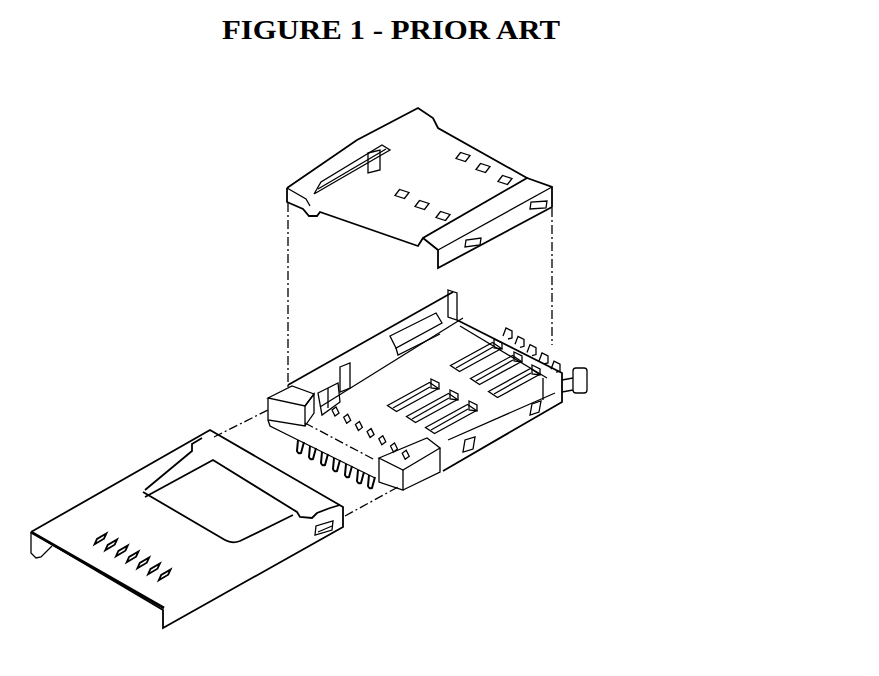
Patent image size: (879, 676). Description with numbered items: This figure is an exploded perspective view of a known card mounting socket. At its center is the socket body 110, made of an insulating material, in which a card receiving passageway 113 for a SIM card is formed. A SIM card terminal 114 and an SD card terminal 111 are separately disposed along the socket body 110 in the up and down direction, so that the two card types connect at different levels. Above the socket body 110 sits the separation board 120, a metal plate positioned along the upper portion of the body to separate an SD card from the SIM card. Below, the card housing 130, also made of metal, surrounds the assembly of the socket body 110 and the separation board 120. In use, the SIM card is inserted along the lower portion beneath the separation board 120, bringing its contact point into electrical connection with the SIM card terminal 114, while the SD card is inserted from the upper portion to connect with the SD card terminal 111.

The socket body 110 is at (391, 406).
The SD card terminal 111 is at (347, 387).
The card receiving passageway 113 is at (402, 375).
The SIM card terminal 114 is at (448, 428).
The separation board 120 is at (444, 140).
The card housing 130 is at (110, 567).